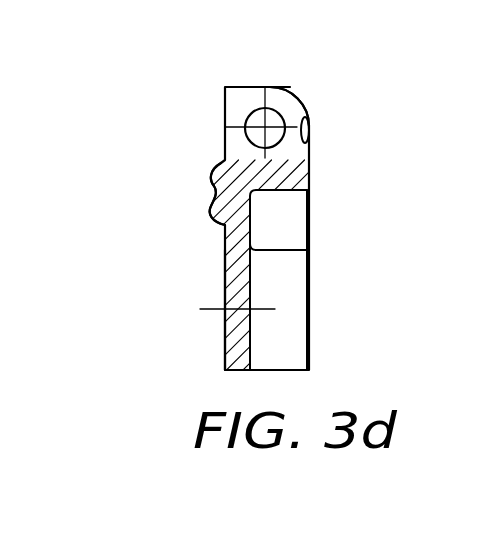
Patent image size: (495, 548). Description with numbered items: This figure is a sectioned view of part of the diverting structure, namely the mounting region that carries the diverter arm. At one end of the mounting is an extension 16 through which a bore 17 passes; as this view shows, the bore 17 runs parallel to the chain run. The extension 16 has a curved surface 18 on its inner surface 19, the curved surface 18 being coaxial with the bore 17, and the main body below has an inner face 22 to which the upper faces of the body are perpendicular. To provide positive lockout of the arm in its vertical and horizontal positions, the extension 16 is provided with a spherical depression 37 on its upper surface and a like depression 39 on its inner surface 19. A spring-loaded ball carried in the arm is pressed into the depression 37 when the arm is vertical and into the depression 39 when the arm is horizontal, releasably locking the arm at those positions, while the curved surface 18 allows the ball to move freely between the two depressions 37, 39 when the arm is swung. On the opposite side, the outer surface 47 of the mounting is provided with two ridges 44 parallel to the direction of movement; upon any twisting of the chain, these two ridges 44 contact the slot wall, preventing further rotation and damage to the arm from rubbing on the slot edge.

The extension 16 is at (225, 127).
The bore 17 is at (256, 116).
The curved surface 18 is at (302, 98).
The inner surface 19 is at (309, 165).
The inner face 22 is at (309, 227).
The spherical depression 37 is at (265, 87).
The depression 39 is at (310, 130).
The ridges 44 is at (208, 217).
The outer surface 47 is at (225, 267).